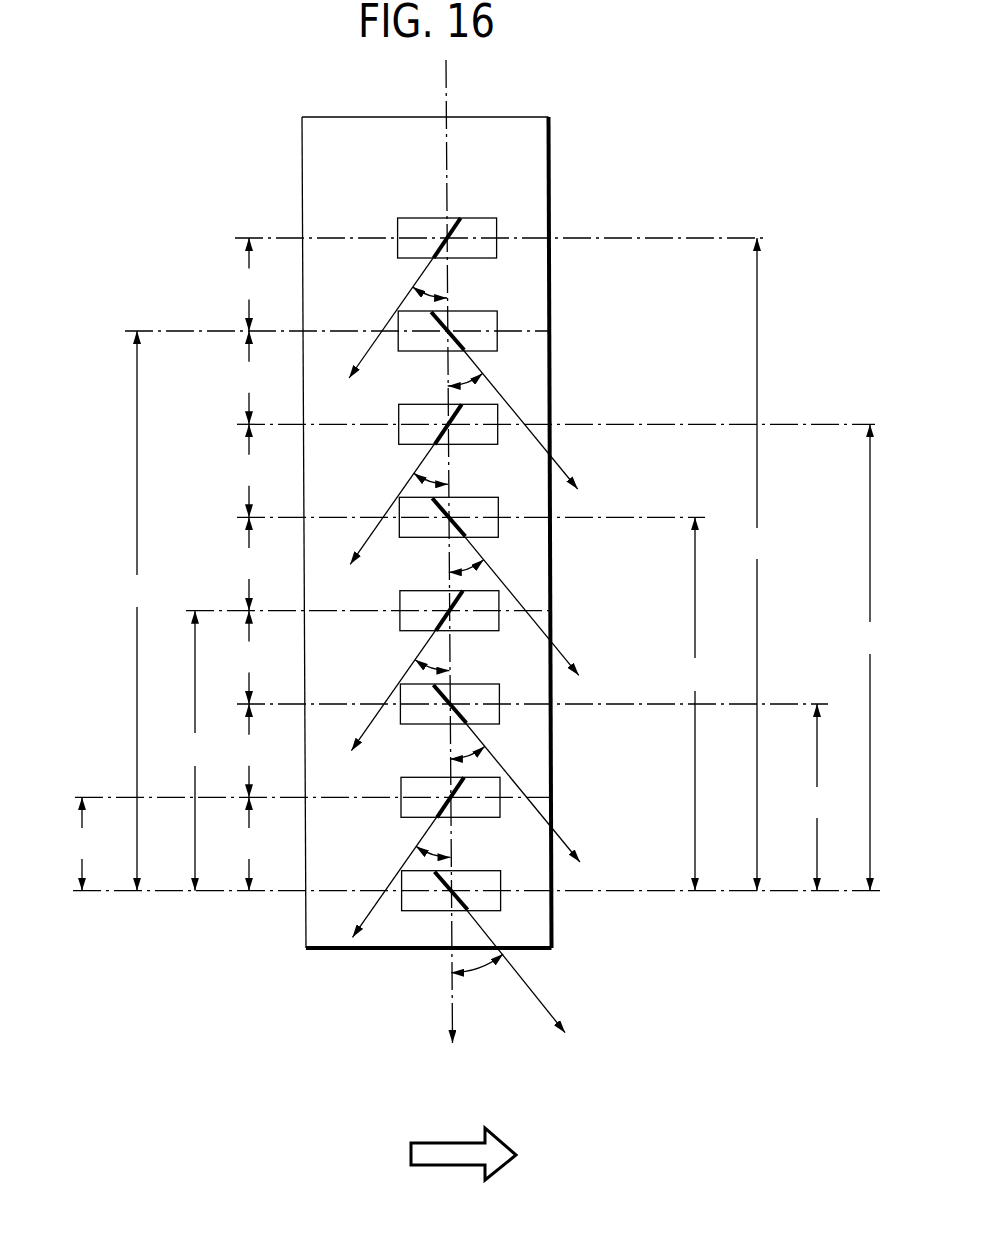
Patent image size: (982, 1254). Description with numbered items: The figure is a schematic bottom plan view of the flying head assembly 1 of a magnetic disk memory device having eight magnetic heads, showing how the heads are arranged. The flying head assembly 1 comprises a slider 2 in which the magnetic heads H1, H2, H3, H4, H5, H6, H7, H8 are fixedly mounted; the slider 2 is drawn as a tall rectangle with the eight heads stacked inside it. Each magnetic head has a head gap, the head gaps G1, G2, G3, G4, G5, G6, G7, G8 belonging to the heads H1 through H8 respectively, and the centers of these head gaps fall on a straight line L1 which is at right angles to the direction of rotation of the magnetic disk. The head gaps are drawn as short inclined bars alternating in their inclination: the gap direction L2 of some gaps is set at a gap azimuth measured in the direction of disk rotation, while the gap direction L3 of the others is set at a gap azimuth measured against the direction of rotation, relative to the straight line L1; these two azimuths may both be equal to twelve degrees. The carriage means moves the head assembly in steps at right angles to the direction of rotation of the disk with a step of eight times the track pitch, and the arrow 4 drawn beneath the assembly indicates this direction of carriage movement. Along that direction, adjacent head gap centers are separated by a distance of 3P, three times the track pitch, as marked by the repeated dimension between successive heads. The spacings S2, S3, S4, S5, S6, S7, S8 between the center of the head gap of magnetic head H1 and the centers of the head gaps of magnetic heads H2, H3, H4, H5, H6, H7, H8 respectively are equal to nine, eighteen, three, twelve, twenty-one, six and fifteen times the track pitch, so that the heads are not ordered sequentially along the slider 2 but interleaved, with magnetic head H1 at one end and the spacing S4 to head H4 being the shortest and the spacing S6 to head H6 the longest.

The flying head assembly 1 is at (533, 135).
The slider 2 is at (533, 174).
The direction of movement arrow 4 is at (457, 1155).
The head gap G1 is at (448, 898).
The head gap G2 is at (447, 607).
The head gap G3 is at (448, 331).
The head gap G4 is at (450, 813).
The head gap G5 is at (452, 518).
The head gap G6 is at (447, 237).
The head gap G7 is at (448, 697).
The head gap G8 is at (448, 424).
The magnetic head H1 is at (483, 902).
The magnetic head H2 is at (480, 620).
The magnetic head H3 is at (487, 339).
The magnetic head H4 is at (482, 808).
The magnetic head H5 is at (477, 527).
The magnetic head H6 is at (487, 245).
The magnetic head H7 is at (480, 714).
The magnetic head H8 is at (478, 435).
The straight line L1 is at (451, 571).
The gap direction L2 is at (514, 682).
The gap direction L3 is at (384, 594).
The spacing S2 is at (194, 751).
The spacing S3 is at (137, 611).
The spacing S4 is at (82, 843).
The spacing S5 is at (695, 703).
The spacing S6 is at (756, 564).
The spacing S7 is at (818, 797).
The spacing S8 is at (868, 657).
The three track pitches 3P is at (248, 564).